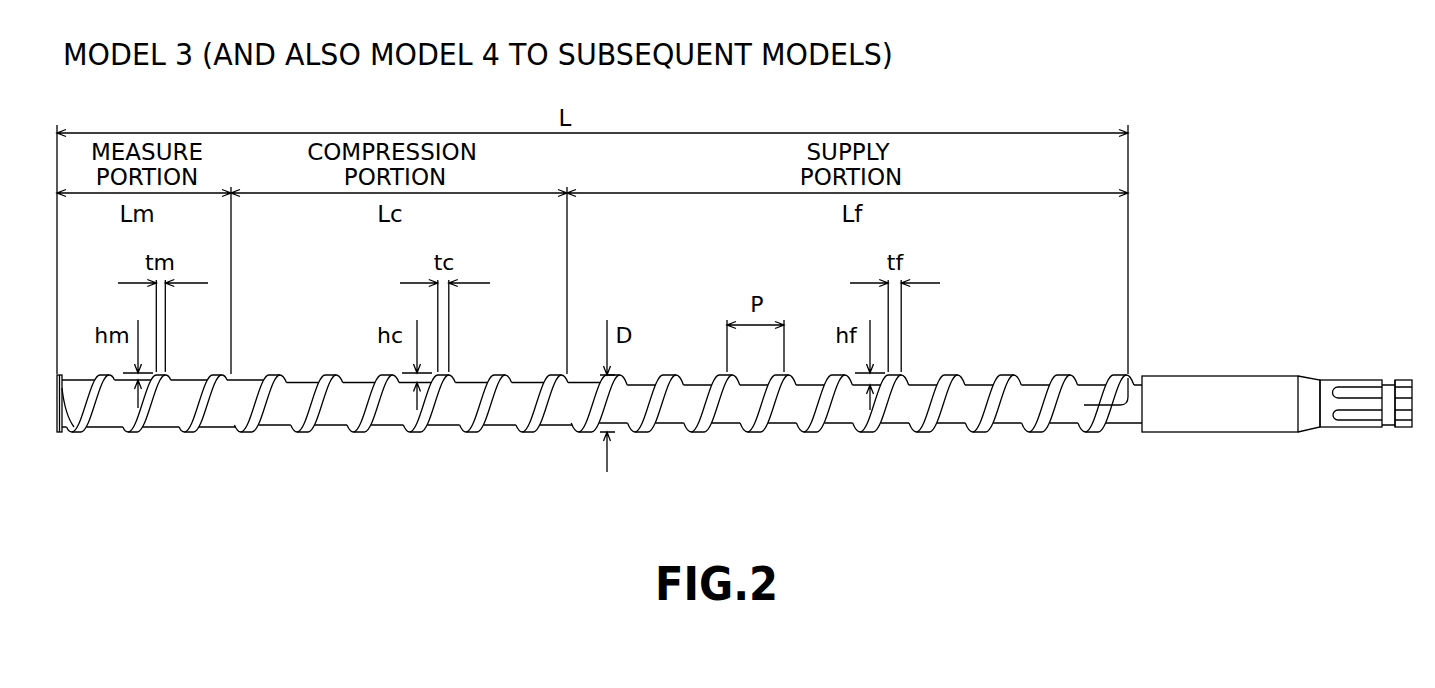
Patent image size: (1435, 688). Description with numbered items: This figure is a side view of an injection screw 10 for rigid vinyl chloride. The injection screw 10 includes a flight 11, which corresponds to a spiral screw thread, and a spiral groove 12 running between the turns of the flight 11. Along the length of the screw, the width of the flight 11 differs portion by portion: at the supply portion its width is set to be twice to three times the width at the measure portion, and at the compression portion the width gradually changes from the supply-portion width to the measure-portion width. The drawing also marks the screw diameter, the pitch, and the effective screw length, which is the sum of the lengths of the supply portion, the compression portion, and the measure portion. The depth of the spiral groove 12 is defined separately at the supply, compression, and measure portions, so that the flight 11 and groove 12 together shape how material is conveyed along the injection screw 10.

The injection screw 10 is at (358, 508).
The flight 11 is at (807, 413).
The spiral groove 12 is at (722, 413).